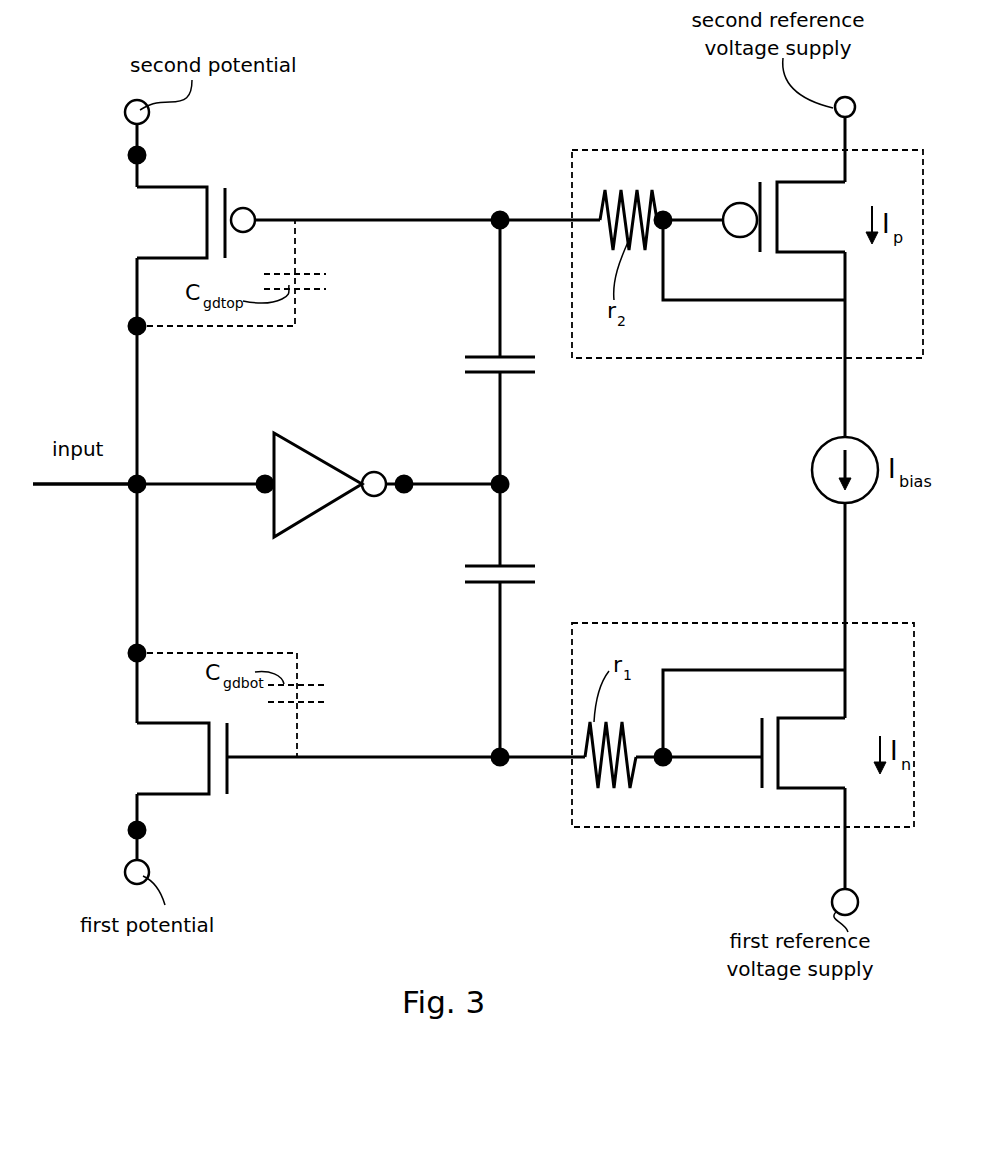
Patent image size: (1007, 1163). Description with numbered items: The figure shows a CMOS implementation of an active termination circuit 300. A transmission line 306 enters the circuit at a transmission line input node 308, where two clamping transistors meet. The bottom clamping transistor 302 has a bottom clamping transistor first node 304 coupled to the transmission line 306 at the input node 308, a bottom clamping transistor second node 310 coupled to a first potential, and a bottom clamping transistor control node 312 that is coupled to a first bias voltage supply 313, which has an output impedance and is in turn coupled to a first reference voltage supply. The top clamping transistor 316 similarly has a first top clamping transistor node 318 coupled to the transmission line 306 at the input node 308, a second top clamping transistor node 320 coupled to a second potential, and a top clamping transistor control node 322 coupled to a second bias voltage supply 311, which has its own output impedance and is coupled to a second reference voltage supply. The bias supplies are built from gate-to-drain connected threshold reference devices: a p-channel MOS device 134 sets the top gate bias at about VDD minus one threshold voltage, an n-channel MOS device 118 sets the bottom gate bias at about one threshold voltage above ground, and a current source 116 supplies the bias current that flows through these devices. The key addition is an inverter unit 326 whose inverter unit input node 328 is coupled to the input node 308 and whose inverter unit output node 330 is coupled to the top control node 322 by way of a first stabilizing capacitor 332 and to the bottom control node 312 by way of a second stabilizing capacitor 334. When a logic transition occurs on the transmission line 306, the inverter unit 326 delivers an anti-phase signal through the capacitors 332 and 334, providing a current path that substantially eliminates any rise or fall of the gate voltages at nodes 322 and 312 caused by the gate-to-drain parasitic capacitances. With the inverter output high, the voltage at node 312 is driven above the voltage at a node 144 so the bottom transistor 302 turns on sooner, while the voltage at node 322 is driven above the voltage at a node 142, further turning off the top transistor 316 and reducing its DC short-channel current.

The termination circuit 300 is at (115, 956).
The bottom clamping transistor 302 is at (207, 760).
The bottom clamping transistor first node 304 is at (128, 655).
The transmission line 306 is at (77, 488).
The transmission line input node 308 is at (145, 489).
The bottom clamping transistor second node 310 is at (129, 830).
The bottom clamping transistor control node 312 is at (508, 766).
The top clamping transistor 316 is at (207, 216).
The first top clamping transistor node 318 is at (129, 327).
The second top clamping transistor node 320 is at (129, 156).
The top clamping transistor control node 322 is at (497, 212).
The inverter unit 326 is at (330, 485).
The inverter unit input node 328 is at (262, 480).
The inverter unit output node 330 is at (406, 476).
The first stabilizing capacitor 332 is at (532, 375).
The second stabilizing capacitor 334 is at (533, 566).
The second bias voltage supply 311 is at (667, 359).
The first bias voltage supply 313 is at (708, 622).
The p-channel MOS device 134 is at (781, 212).
The n-channel MOS device 118 is at (782, 748).
The current source 116 is at (812, 458).
The node 142 is at (662, 210).
The node 144 is at (657, 768).